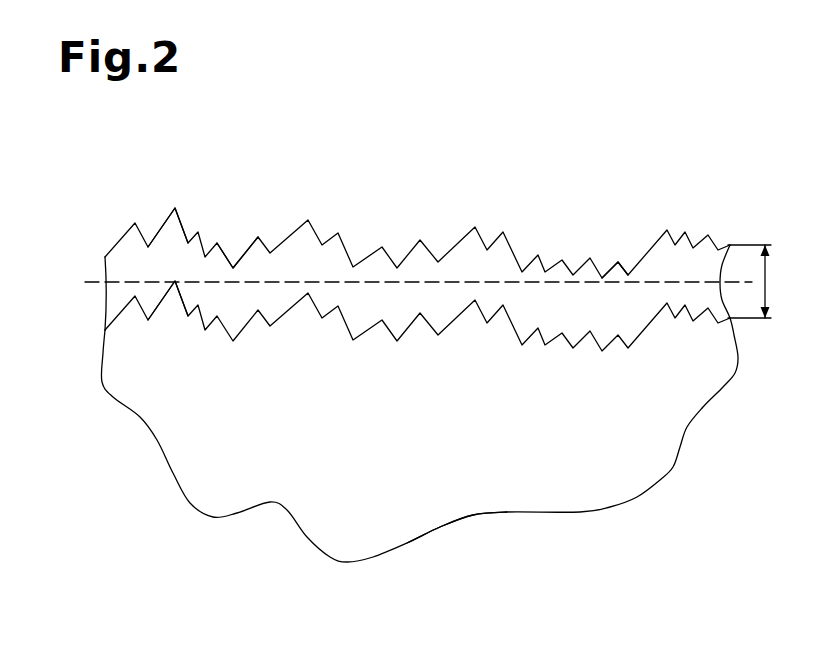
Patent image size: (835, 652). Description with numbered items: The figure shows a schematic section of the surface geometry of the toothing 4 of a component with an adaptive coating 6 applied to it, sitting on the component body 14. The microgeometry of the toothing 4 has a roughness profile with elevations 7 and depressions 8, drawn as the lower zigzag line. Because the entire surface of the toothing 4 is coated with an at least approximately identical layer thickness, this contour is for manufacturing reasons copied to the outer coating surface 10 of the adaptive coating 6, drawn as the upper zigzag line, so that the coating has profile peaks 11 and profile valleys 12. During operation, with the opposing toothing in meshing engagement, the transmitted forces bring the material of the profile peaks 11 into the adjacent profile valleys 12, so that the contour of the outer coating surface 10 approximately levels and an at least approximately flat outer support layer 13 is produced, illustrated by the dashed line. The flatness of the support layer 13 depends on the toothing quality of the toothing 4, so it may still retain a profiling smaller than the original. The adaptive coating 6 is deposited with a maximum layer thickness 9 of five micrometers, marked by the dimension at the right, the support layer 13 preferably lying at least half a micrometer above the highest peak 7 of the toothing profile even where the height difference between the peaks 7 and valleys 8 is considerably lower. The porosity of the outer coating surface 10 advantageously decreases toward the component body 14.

The toothing 4 is at (610, 425).
The adaptive coating 6 is at (477, 222).
The elevations 7 is at (182, 275).
The depressions 8 is at (276, 304).
The layer thickness 9 is at (770, 268).
The outer coating surface 10 is at (618, 258).
The profile peaks 11 is at (175, 205).
The profile valleys 12 is at (233, 252).
The outer support layer 13 is at (88, 277).
The component body 14 is at (448, 468).